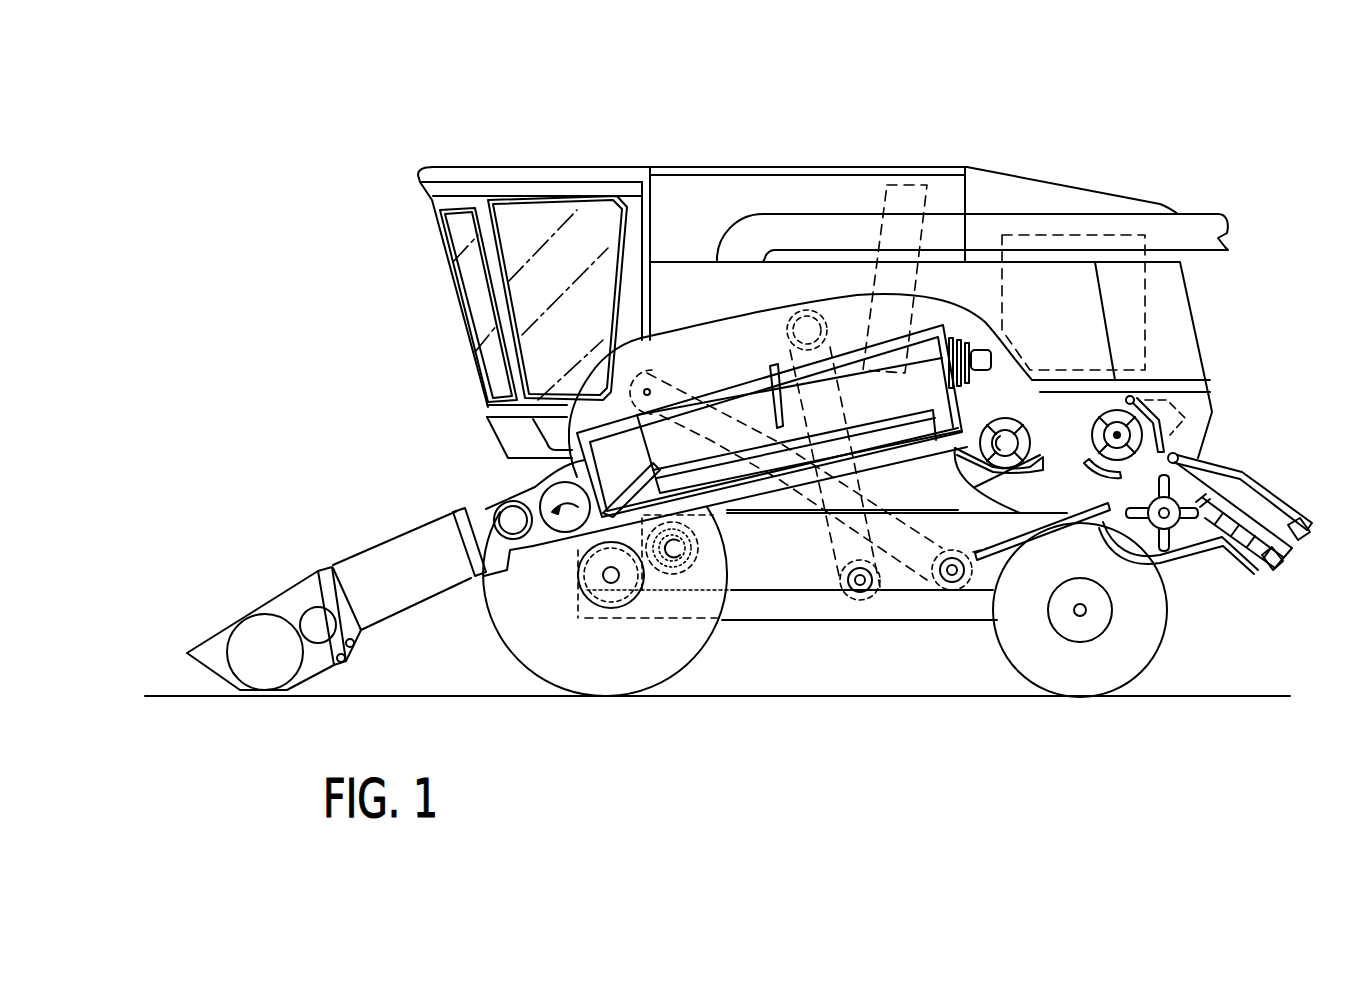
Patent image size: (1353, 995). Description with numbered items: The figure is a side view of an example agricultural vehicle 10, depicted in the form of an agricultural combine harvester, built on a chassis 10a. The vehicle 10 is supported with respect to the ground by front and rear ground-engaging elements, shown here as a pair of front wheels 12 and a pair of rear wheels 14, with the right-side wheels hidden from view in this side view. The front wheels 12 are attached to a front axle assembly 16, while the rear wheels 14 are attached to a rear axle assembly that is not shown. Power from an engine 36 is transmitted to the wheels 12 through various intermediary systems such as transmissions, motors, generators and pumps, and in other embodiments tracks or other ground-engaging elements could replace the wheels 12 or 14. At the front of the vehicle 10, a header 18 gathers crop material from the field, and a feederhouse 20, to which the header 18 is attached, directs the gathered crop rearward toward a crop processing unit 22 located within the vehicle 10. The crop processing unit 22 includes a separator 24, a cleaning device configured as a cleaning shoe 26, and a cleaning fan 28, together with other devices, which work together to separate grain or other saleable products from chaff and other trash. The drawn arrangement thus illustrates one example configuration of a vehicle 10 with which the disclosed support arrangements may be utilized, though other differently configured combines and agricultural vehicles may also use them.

The agricultural vehicle 10 is at (1068, 152).
The chassis 10a is at (892, 626).
The front wheels 12 is at (683, 681).
The rear wheels 14 is at (1083, 701).
The front axle assembly 16 is at (601, 598).
The header 18 is at (243, 612).
The feederhouse 20 is at (396, 547).
The crop processing unit 22 is at (720, 377).
The separator 24 is at (757, 385).
The cleaning shoe 26 is at (805, 593).
The cleaning fan 28 is at (683, 580).
The engine 36 is at (1145, 318).